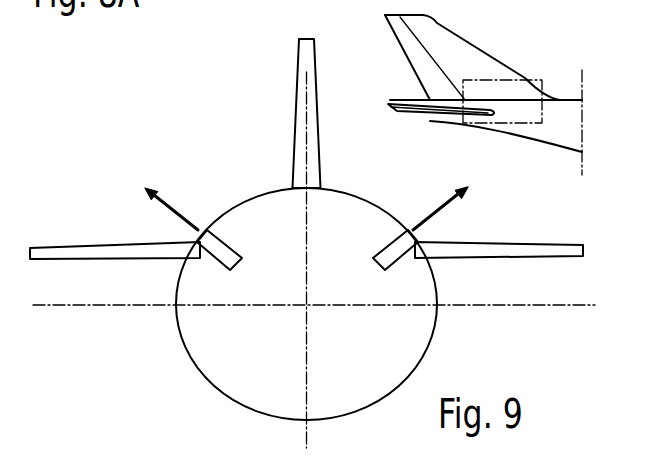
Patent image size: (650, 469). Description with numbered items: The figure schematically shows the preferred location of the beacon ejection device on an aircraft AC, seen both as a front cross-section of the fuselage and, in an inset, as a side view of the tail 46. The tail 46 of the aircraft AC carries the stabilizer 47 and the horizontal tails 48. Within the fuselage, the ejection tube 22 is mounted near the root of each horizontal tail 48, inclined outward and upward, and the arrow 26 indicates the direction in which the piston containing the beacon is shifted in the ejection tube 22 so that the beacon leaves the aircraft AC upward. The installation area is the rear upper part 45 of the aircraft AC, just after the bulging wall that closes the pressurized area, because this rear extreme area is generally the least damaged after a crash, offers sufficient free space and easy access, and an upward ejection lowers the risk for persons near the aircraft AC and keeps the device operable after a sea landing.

The ejection tube 22 is at (222, 232).
The arrow 26 is at (168, 210).
The rear upper part 45 is at (538, 66).
The tail 46 is at (465, 144).
The stabilizer 47 is at (443, 0).
The horizontal tails 48 is at (92, 260).
The aircraft AC is at (437, 332).